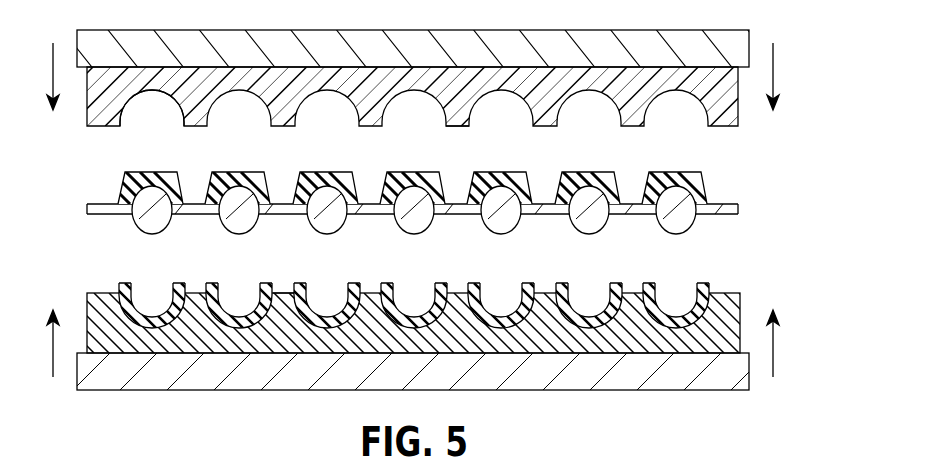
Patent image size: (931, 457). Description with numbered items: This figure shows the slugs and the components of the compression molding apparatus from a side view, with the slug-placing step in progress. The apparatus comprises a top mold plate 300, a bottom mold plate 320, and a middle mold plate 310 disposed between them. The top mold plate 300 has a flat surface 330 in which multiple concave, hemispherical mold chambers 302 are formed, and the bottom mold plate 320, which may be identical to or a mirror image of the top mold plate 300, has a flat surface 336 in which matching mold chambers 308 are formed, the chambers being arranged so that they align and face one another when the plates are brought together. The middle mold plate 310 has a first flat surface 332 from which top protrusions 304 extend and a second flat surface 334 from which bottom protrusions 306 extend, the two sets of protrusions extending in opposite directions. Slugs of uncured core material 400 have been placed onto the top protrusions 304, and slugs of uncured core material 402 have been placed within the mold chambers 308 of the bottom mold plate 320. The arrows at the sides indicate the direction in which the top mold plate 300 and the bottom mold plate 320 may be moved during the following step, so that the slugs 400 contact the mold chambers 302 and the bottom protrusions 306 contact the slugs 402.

The top mold plate 300 is at (738, 118).
The mold chambers 302 is at (145, 92).
The top protrusions 304 is at (197, 161).
The bottom protrusions 306 is at (140, 230).
The mold chambers 308 is at (154, 339).
The middle mold plate 310 is at (448, 205).
The bottom mold plate 320 is at (740, 303).
The flat surface 330 is at (455, 125).
The first flat surface 332 is at (370, 205).
The second flat surface 334 is at (372, 215).
The flat surface 336 is at (287, 293).
The slugs of uncured core material 400 is at (131, 210).
The slugs of uncured core material 402 is at (143, 298).